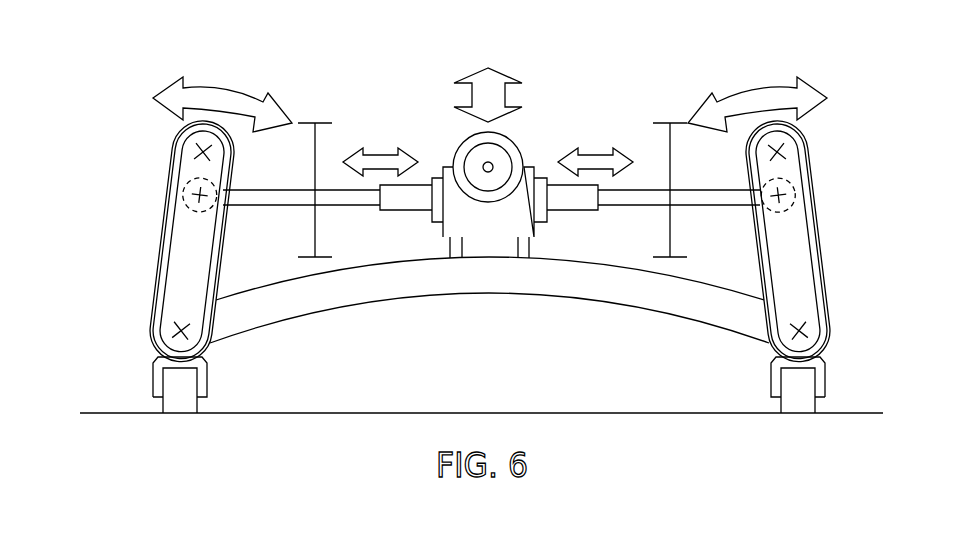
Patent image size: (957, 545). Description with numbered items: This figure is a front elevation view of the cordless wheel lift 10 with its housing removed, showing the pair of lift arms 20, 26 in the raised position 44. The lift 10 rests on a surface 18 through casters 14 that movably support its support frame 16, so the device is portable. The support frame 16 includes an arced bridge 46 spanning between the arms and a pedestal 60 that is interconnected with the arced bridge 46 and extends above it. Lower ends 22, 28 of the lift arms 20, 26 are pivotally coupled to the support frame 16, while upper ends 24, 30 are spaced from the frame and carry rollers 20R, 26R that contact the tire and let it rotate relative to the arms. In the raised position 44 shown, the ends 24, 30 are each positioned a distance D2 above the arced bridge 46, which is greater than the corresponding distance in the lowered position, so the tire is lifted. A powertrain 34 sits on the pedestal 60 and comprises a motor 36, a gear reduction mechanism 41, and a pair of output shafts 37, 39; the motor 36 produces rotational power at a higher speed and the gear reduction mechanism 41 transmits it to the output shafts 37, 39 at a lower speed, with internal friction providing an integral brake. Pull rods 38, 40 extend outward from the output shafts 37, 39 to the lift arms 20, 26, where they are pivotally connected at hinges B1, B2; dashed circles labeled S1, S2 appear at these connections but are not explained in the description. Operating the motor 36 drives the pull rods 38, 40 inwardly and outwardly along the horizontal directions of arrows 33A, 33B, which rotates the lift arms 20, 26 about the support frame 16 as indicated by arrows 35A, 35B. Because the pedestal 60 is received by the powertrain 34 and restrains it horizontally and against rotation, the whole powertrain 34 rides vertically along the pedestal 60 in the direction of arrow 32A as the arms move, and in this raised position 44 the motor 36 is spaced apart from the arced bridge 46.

The cordless wheel lift 10 is at (689, 67).
The casters 14 is at (198, 405).
The support frame 16 is at (489, 316).
The surface 18 is at (567, 412).
The lift arm 20 is at (156, 238).
The roller 20R is at (176, 136).
The end of lift arm 22 is at (181, 331).
The end of lift arm 24 is at (203, 152).
The lift arm 26 is at (810, 219).
The roller 26R is at (808, 124).
The end of lift arm 28 is at (799, 331).
The end of lift arm 30 is at (777, 152).
The arrow 32A is at (506, 93).
The arrow 33A is at (378, 152).
The arrow 33B is at (596, 152).
The powertrain 34 is at (451, 137).
The arrow 35A is at (196, 86).
The arrow 35B is at (750, 83).
The motor 36 is at (524, 147).
The output shaft 37 is at (403, 203).
The pull rod 38 is at (262, 197).
The output shaft 39 is at (572, 202).
The pull rod 40 is at (643, 196).
The gear reduction mechanism 41 is at (466, 220).
The raised position 44 is at (640, 87).
The arced bridge 46 is at (564, 290).
The pedestal 60 is at (528, 238).
The hinge B1 is at (185, 200).
The hinge B2 is at (778, 195).
The first sensor location S1 is at (200, 195).
The second sensor location S2 is at (787, 208).
The distance D2 is at (499, 190).